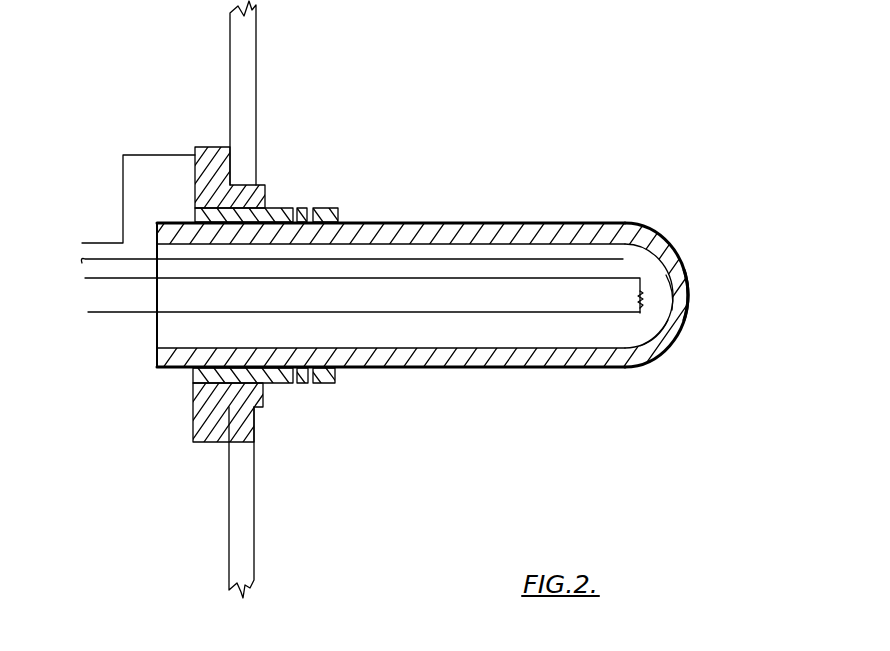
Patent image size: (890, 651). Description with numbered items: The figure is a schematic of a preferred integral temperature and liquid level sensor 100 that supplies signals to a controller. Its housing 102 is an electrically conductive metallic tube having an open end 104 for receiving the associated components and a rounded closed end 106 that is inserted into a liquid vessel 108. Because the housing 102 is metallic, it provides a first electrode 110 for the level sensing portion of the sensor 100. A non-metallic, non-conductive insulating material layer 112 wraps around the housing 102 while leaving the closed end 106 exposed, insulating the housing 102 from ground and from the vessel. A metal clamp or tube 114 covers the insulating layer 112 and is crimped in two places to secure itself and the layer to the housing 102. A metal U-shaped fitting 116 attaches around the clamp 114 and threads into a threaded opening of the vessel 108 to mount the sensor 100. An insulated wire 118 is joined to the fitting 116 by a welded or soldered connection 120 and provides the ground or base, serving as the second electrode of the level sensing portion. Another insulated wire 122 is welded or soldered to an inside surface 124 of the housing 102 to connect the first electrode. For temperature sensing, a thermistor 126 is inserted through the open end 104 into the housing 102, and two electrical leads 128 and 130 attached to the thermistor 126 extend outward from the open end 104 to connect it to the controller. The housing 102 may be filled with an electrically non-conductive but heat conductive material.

The integral temperature and liquid level sensor 100 is at (563, 137).
The housing 102 is at (691, 318).
The open end 104 is at (150, 320).
The closed end 106 is at (676, 331).
The liquid vessel 108 is at (245, 58).
The first electrode 110 is at (670, 252).
The insulating material layer 112 is at (625, 223).
The metal clamp or tube 114 is at (340, 206).
The metal fitting 116 is at (265, 181).
The insulated wire 118 is at (137, 155).
The welded or soldered connection 120 is at (190, 150).
The insulated wire 122 is at (80, 259).
The inside surface 124 is at (680, 300).
The thermistor 126 is at (650, 287).
The electrical lead 128 is at (100, 278).
The electrical lead 130 is at (88, 310).